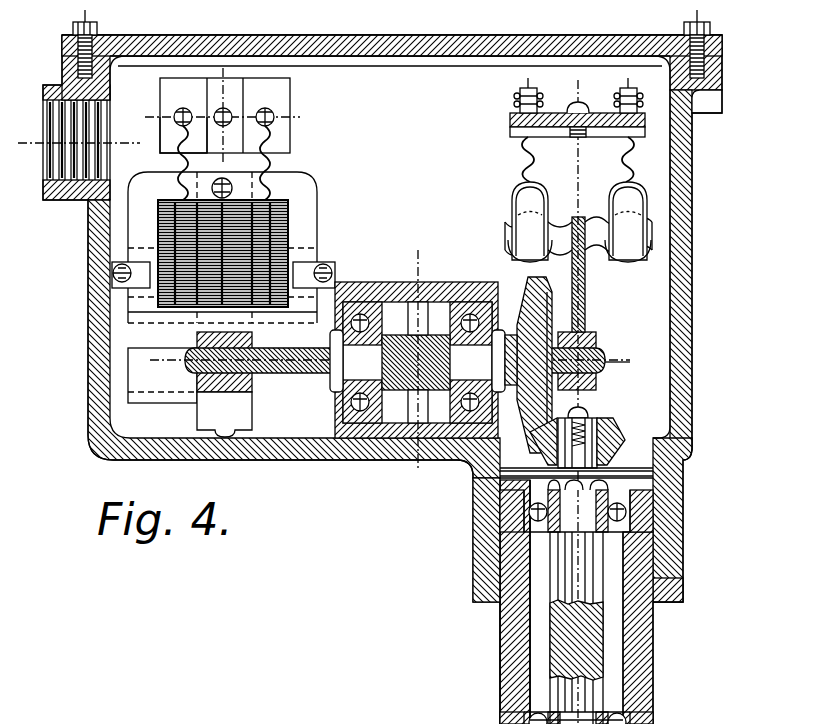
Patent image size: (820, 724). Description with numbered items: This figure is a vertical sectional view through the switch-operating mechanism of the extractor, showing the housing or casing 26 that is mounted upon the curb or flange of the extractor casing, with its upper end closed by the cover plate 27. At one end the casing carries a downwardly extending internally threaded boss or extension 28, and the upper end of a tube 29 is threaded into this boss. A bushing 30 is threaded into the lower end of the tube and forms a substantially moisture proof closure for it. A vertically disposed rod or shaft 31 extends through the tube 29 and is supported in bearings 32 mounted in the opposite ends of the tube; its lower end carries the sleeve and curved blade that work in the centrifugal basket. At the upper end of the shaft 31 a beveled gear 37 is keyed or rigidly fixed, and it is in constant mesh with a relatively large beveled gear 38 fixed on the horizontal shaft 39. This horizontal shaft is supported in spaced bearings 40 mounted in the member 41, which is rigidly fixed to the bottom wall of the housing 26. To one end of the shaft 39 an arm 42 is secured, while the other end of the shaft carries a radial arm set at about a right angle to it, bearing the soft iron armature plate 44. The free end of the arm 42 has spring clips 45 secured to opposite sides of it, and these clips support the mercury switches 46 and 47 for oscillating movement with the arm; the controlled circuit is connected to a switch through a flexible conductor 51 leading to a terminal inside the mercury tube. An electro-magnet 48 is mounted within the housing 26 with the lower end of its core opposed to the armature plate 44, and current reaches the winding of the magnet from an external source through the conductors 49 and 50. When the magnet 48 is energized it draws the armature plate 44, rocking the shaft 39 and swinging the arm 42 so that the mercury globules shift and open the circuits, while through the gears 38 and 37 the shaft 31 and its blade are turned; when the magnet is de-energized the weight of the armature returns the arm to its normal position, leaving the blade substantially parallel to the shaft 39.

The housing or casing 26 is at (88, 336).
The cover plate 27 is at (302, 35).
The internally threaded boss or extension 28 is at (484, 540).
The tube 29 is at (518, 642).
The bushing 30 is at (500, 722).
The rod or shaft 31 is at (577, 563).
The bearings 32 is at (517, 512).
The beveled gear 37 is at (600, 427).
The beveled gear 38 is at (477, 210).
The horizontal shaft 39 is at (200, 370).
The bearings 40 is at (380, 282).
The member 41 is at (387, 388).
The arm 42 is at (197, 340).
The soft iron armature plate 44 is at (215, 420).
The spring clips 45 is at (607, 222).
The mercury switch 46 is at (636, 200).
The mercury switch 47 is at (531, 196).
The electro-magnet 48 is at (287, 214).
The conductor 49 is at (290, 135).
The conductor 50 is at (161, 132).
The flexible conductor 51 is at (627, 163).